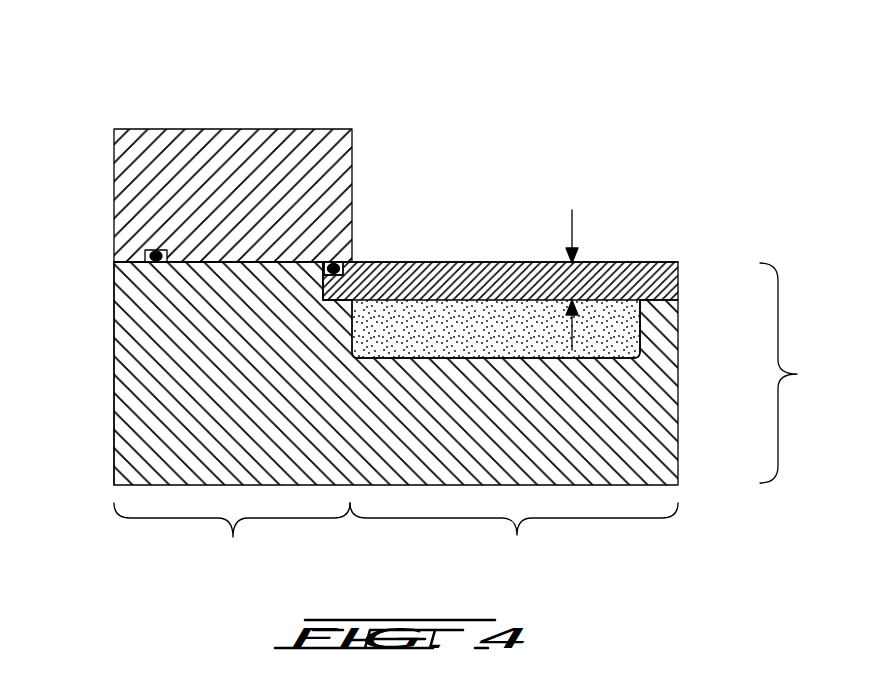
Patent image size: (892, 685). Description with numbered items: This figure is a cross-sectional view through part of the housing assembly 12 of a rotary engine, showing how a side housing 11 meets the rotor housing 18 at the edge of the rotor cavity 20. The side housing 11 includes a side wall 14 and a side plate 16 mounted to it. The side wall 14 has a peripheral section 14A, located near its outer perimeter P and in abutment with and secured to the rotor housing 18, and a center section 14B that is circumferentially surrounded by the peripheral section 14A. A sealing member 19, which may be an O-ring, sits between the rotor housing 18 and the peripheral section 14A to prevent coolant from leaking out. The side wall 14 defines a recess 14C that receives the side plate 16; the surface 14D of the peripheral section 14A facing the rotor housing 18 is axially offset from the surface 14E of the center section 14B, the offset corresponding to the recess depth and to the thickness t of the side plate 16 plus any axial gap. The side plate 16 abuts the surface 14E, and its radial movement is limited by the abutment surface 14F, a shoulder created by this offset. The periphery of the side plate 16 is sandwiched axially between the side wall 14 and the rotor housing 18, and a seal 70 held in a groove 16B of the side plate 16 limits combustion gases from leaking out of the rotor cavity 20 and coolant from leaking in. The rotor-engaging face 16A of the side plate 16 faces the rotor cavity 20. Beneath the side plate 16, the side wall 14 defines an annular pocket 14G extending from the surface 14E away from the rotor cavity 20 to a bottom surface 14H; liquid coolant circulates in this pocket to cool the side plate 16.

The side housing 11 is at (791, 373).
The housing assembly 12 is at (540, 122).
The side wall 14 is at (147, 460).
The peripheral section 14A is at (232, 538).
The center section 14B is at (514, 537).
The recess 14C is at (658, 301).
The surface of the peripheral section 14D is at (195, 266).
The surface of the center section 14E is at (333, 302).
The abutment surface 14F is at (322, 287).
The pocket 14G is at (612, 350).
The bottom surface of the pocket 14H is at (437, 357).
The side plate 16 is at (620, 283).
The rotor-engaging face 16A is at (402, 263).
The groove 16B is at (333, 263).
The seal 70 is at (331, 174).
The rotor housing 18 is at (168, 129).
The sealing member 19 is at (147, 253).
The rotor cavity 20 is at (501, 201).
The thickness of the side plate t is at (572, 227).
The outer perimeter P is at (113, 422).